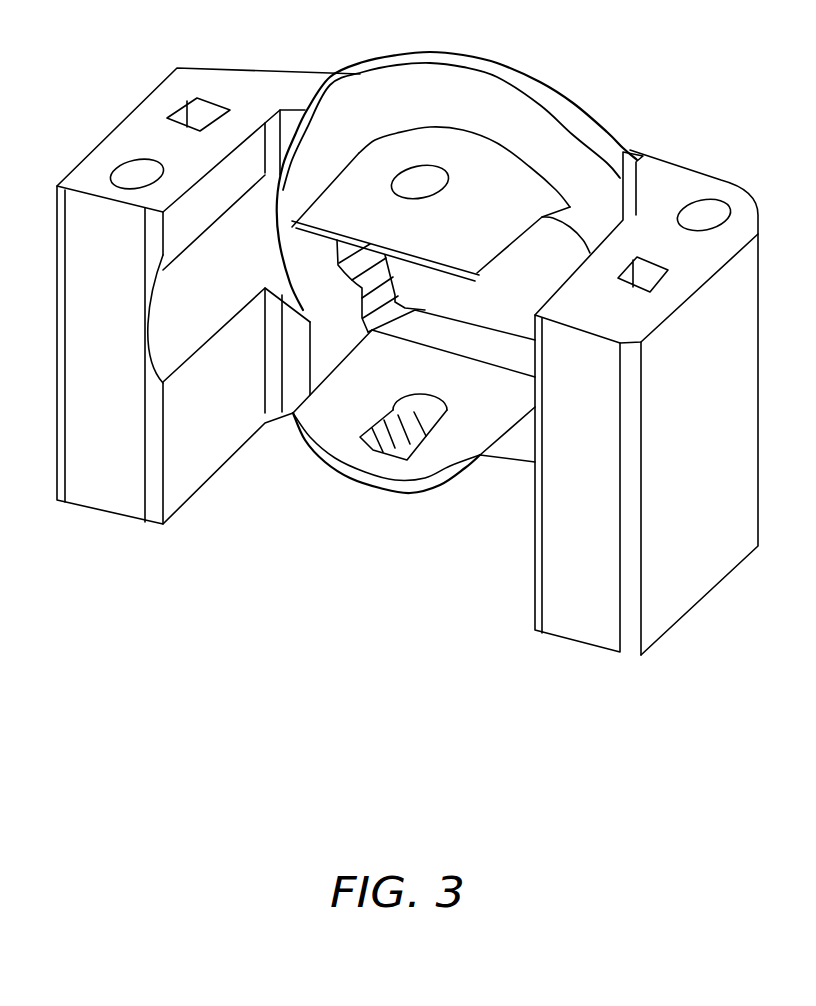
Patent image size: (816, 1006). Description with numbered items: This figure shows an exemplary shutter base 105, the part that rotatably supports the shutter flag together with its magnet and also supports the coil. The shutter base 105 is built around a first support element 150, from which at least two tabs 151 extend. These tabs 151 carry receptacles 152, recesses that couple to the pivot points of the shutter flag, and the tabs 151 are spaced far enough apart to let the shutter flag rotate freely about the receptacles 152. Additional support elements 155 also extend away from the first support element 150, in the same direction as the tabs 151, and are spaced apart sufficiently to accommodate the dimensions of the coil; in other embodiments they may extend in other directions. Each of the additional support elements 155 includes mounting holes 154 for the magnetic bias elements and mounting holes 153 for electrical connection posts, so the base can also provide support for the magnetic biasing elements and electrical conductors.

The shutter base 105 is at (654, 78).
The first support element 150 is at (482, 70).
The tabs 151 is at (496, 215).
The receptacles 152 is at (417, 180).
The mounting holes for electrical connection posts 153 is at (199, 115).
The mounting holes for the magnetic bias elements 154 is at (137, 173).
The additional support elements 155 is at (118, 443).